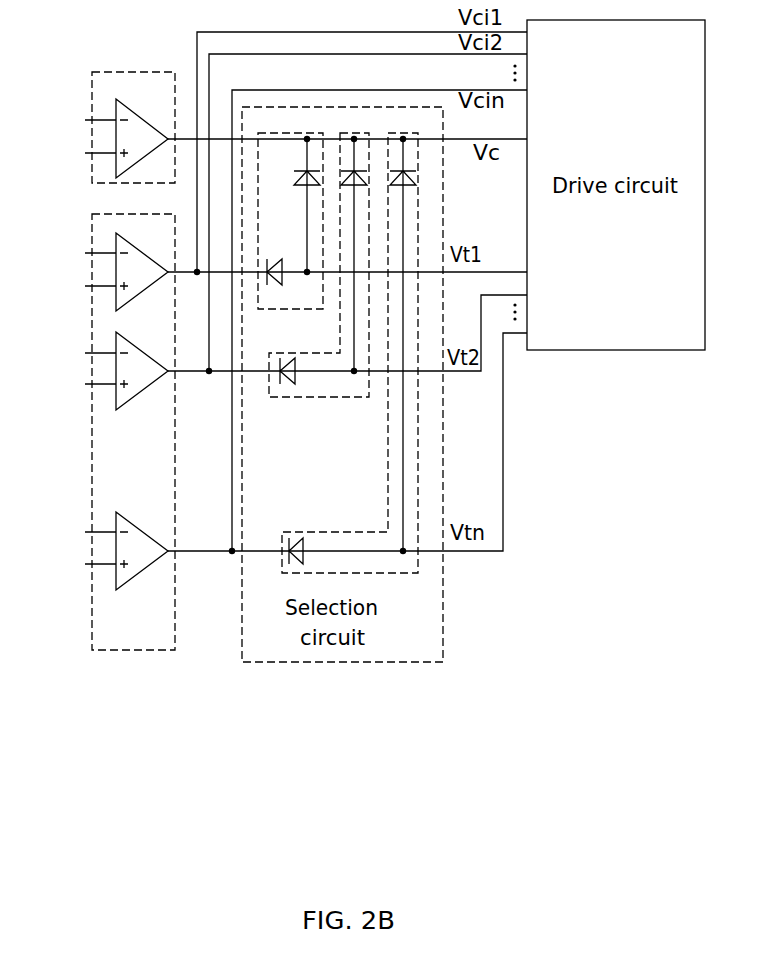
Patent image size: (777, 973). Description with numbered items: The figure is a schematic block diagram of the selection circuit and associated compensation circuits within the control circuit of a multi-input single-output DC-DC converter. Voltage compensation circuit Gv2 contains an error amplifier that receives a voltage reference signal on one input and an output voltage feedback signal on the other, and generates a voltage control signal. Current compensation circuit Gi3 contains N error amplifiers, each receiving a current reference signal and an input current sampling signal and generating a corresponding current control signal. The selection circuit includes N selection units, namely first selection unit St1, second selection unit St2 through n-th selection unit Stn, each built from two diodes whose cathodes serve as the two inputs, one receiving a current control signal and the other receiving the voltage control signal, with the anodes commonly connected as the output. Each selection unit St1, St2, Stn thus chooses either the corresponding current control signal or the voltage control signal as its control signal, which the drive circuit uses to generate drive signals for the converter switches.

The voltage compensation circuit Gv2 is at (106, 127).
The current compensation circuit Gi3 is at (108, 432).
The first selection unit St1 is at (290, 221).
The second selection unit St2 is at (319, 265).
The n-th selection unit Stn is at (350, 353).